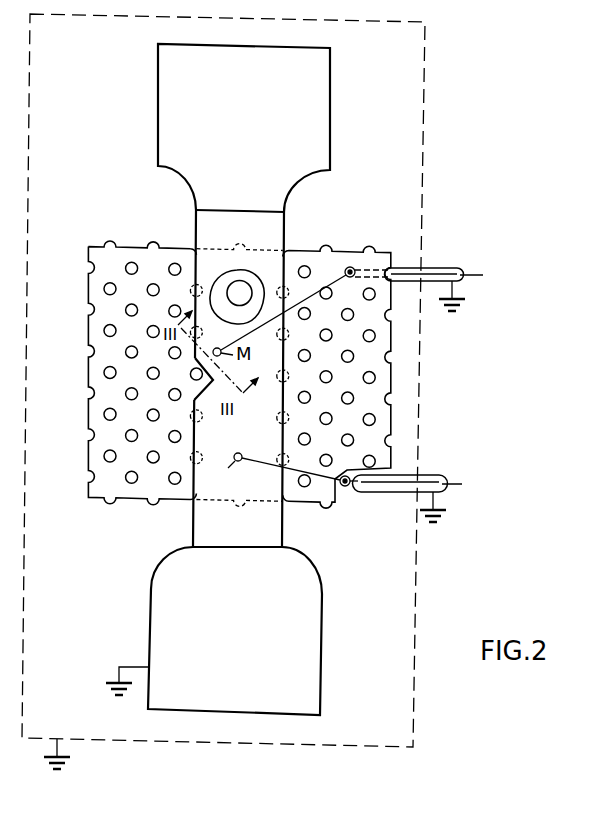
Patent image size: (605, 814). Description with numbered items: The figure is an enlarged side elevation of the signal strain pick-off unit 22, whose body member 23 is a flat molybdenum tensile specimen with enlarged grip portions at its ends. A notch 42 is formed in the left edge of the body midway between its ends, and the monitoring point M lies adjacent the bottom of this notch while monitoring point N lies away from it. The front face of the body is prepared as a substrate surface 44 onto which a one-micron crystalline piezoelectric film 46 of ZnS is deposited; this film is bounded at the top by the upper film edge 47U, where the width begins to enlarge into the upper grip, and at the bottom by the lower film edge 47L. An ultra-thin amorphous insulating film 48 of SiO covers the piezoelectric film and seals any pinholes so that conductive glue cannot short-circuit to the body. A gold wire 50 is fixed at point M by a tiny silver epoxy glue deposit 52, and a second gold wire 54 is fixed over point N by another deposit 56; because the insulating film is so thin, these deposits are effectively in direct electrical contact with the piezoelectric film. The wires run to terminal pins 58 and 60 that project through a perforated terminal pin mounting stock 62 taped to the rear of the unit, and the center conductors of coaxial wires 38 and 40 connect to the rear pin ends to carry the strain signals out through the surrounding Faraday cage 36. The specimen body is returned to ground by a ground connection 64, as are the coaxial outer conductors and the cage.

The signal strain pick-off unit 22 is at (403, 111).
The body member 23 is at (158, 108).
The Faraday cage 36 is at (425, 65).
The coaxial wire 38 is at (440, 268).
The coaxial wire 40 is at (431, 477).
The notch 42 is at (203, 389).
The substrate surface 44 is at (247, 289).
The piezoelectric film 46 is at (227, 277).
The upper film edge 47U is at (243, 211).
The lower film edge 47L is at (234, 549).
The insulating film 48 is at (247, 536).
The gold wire 50 is at (296, 336).
The silver epoxy glue deposit 52 is at (215, 349).
The gold wire 54 is at (302, 468).
The silver epoxy glue deposit 56 is at (239, 453).
The terminal pin 58 is at (348, 266).
The terminal pin 60 is at (347, 487).
The perforated terminal pin mounting stock 62 is at (136, 249).
The ground connection 64 is at (112, 680).